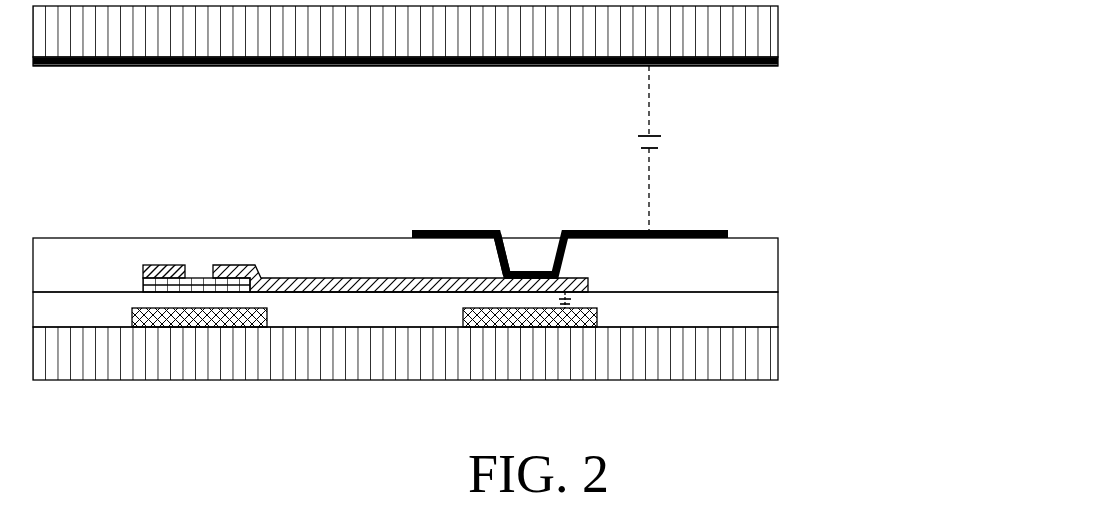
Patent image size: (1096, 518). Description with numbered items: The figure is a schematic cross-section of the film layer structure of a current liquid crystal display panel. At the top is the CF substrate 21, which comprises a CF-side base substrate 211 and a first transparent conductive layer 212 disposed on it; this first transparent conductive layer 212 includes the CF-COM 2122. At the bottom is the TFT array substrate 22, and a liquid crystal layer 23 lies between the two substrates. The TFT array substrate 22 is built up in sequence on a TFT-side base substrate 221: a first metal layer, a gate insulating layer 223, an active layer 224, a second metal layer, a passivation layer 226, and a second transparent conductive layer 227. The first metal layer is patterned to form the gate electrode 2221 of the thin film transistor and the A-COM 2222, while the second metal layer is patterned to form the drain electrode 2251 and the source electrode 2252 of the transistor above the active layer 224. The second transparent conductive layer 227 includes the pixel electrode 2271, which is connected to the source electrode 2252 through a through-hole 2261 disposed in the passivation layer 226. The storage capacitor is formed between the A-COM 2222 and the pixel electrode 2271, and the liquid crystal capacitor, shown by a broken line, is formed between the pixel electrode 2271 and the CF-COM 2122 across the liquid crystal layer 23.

The CF substrate 21 is at (486, 64).
The CF-side base substrate 211 is at (778, 29).
The first transparent conductive layer 212 is at (778, 60).
The CF-COM 2122 is at (255, 65).
The liquid crystal layer 23 is at (700, 128).
The TFT array substrate 22 is at (485, 286).
The TFT-side base substrate 221 is at (778, 365).
The gate electrode 2221 is at (190, 316).
The A-COM 2222 is at (558, 328).
The gate insulating layer 223 is at (778, 316).
The active layer 224 is at (250, 293).
The drain electrode 2251 is at (163, 265).
The source electrode 2252 is at (245, 265).
The passivation layer 226 is at (778, 265).
The second transparent conductive layer 227 is at (778, 235).
The pixel electrode 2271 is at (483, 232).
The through-hole 2261 is at (530, 268).